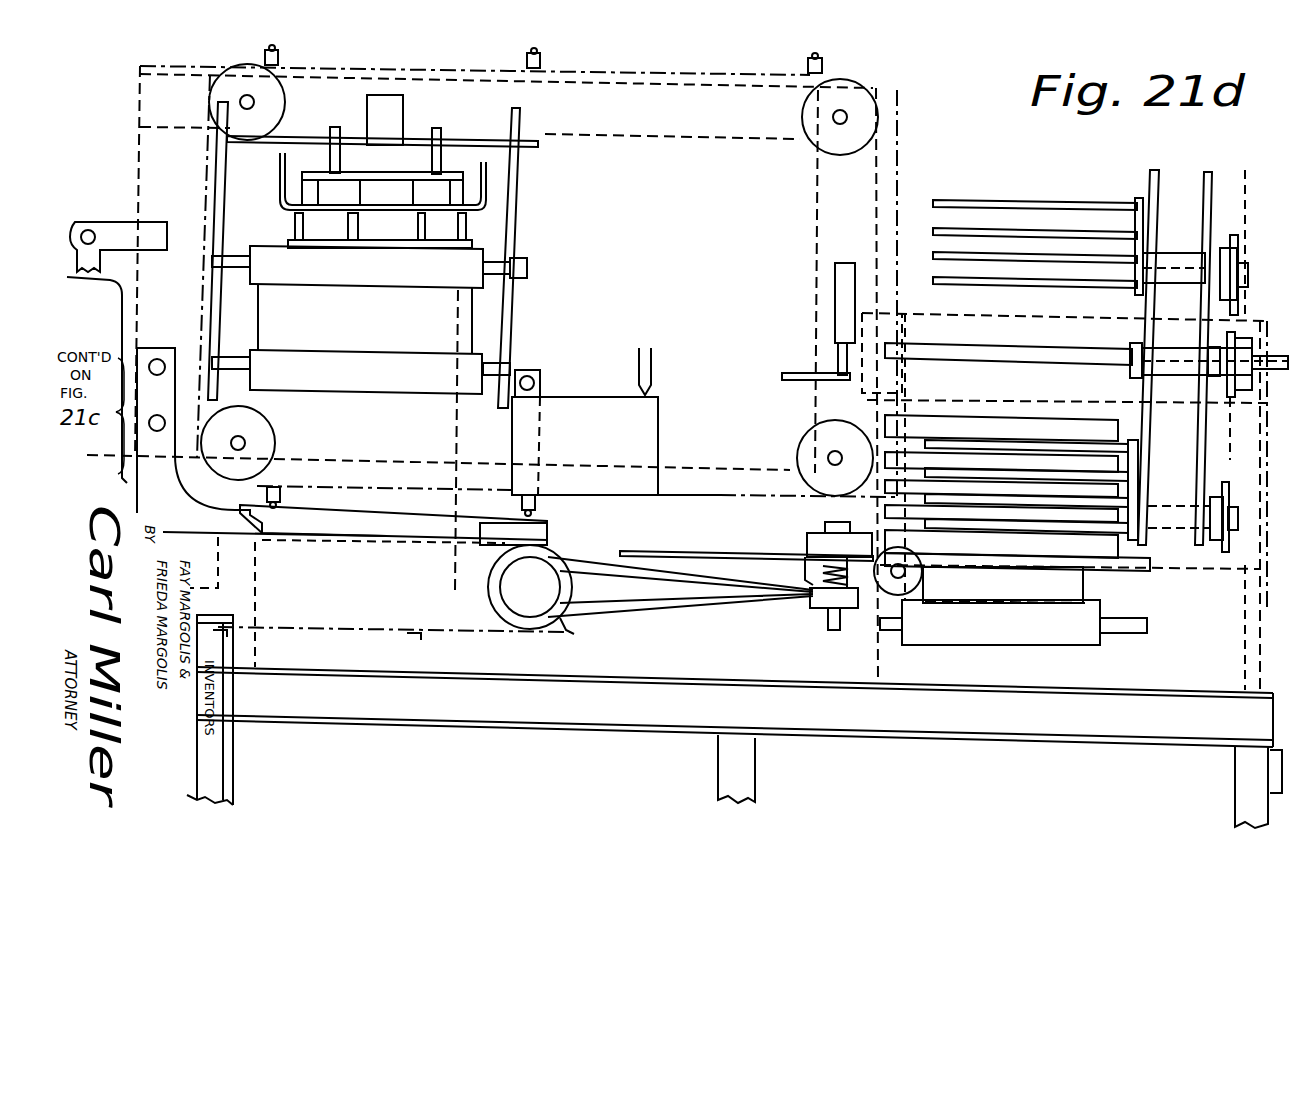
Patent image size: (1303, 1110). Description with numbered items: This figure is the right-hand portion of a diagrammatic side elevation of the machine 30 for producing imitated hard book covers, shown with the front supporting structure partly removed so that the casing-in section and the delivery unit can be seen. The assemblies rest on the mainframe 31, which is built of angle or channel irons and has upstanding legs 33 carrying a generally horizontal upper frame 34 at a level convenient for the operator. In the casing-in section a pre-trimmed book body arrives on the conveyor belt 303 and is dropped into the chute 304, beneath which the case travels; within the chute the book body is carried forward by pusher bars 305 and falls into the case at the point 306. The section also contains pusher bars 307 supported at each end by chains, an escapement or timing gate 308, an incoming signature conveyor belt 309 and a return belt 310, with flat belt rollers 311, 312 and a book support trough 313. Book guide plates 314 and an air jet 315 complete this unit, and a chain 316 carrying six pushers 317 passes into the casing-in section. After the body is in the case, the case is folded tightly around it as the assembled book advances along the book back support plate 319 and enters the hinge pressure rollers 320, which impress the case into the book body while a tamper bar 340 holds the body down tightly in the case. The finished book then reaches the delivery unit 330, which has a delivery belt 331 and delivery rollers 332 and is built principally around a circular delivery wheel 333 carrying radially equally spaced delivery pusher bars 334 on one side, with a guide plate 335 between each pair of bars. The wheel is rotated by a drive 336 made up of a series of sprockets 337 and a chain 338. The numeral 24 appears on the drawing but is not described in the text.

The section line 24 is at (1245, 182).
The machine 30 is at (945, 142).
The mainframe 31 is at (414, 737).
The upstanding legs 33 is at (722, 778).
The upper frame 34 is at (490, 712).
The conveyor belt 303 is at (445, 262).
The chute 304 is at (445, 331).
The pusher bars 305 is at (300, 485).
The point 306 is at (668, 486).
The pusher bars 307 is at (280, 50).
The escapement or timing gate 308 is at (468, 192).
The incoming signature conveyor belt 309 is at (488, 208).
The return belt 310 is at (465, 232).
The flat belt roller 311 is at (296, 288).
The flat belt roller 312 is at (296, 395).
The book support trough 313 is at (404, 522).
The book guide plates 314 is at (618, 398).
The air jet 315 is at (634, 358).
The chain 316 is at (330, 625).
The pushers 317 is at (222, 634).
The book back support plate 319 is at (698, 555).
The hinge pressure rollers 320 is at (810, 536).
The delivery unit 330 is at (1044, 176).
The delivery belt 331 is at (1070, 580).
The delivery rollers 332 is at (893, 592).
The circular delivery wheel 333 is at (1160, 172).
The delivery pusher bars 334 is at (1075, 240).
The guide plate 335 is at (970, 490).
The drive 336 is at (1268, 300).
The sprockets 337 is at (1248, 228).
The chain 338 is at (1227, 464).
The tamper bar 340 is at (845, 263).